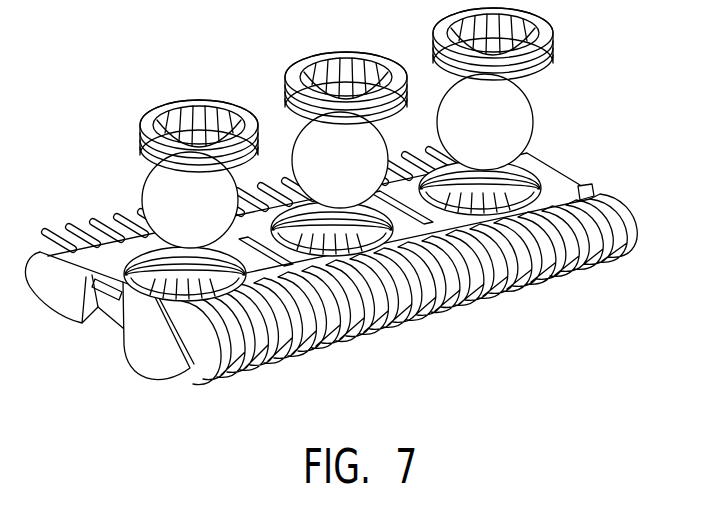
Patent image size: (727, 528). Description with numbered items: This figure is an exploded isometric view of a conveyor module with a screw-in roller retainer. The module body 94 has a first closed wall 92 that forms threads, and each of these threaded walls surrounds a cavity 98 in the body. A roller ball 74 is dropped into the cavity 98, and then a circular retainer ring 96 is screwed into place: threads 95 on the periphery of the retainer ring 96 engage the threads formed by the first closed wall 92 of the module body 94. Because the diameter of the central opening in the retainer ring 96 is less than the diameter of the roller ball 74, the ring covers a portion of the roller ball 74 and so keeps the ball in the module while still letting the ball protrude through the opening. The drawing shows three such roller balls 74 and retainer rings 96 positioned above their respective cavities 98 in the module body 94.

The roller ball 74 is at (524, 112).
The first closed wall 92 is at (95, 279).
The module body 94 is at (587, 186).
The threads 95 is at (143, 133).
The retainer ring 96 is at (318, 56).
The cavity 98 is at (157, 273).